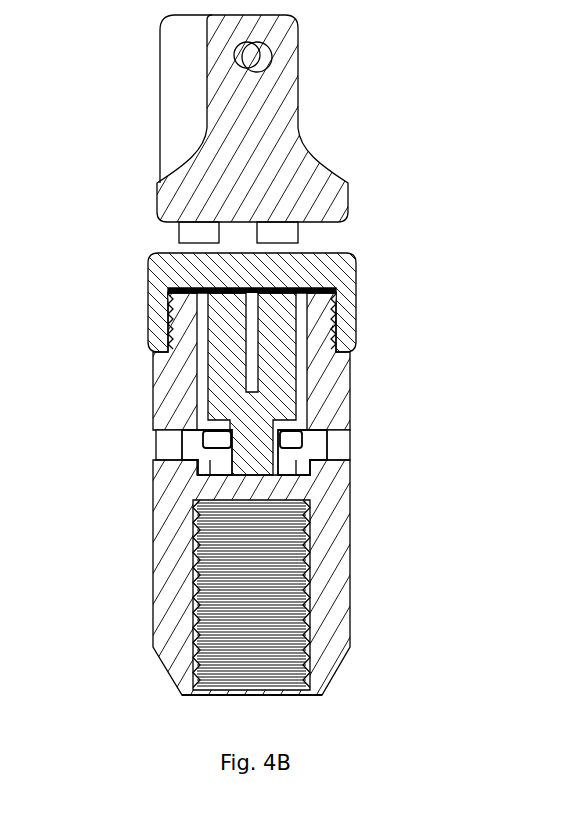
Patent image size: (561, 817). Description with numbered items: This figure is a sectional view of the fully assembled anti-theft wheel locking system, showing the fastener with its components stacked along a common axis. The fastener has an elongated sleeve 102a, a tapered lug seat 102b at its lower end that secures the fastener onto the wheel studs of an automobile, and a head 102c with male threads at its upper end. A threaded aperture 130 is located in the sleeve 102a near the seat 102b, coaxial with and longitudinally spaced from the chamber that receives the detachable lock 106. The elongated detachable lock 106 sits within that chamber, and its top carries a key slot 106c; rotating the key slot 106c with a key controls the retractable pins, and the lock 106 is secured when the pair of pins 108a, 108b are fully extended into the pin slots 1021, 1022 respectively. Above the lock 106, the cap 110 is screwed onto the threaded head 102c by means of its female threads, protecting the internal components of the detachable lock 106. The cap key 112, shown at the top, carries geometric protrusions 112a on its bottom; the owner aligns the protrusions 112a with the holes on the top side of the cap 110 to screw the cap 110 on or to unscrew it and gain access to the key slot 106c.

The cap key 112 is at (192, 169).
The geometric protrusions 112a is at (178, 238).
The cap 110 is at (334, 273).
The head 102c is at (346, 317).
The detachable lock 106 is at (240, 384).
The key slot 106c is at (239, 372).
The pin slot 1021 is at (164, 449).
The pin slot 1022 is at (342, 443).
The pin 108a is at (201, 459).
The pin 108b is at (309, 456).
The elongated sleeve 102a is at (251, 577).
The threaded aperture 130 is at (219, 590).
The seat 102b is at (271, 696).